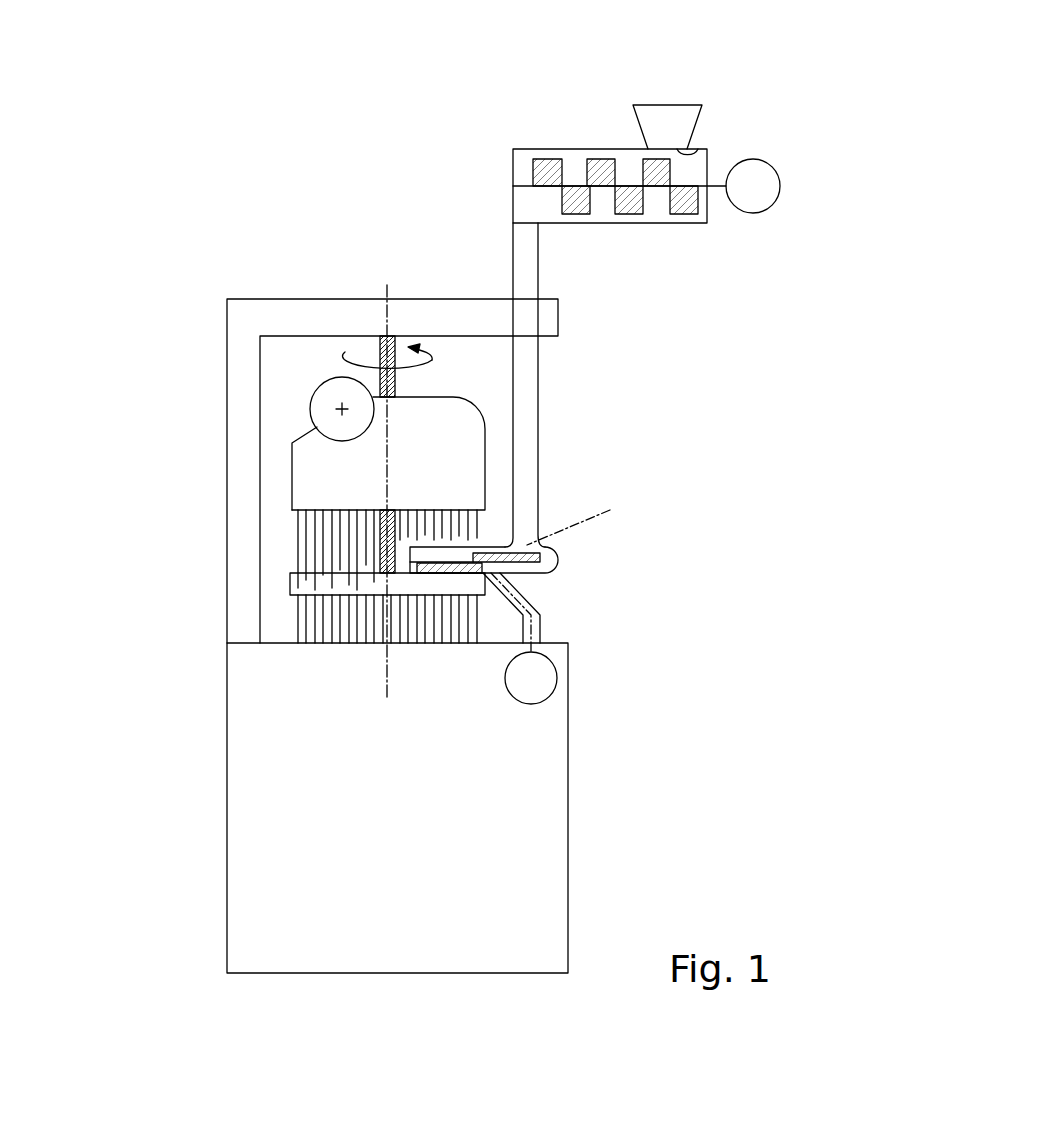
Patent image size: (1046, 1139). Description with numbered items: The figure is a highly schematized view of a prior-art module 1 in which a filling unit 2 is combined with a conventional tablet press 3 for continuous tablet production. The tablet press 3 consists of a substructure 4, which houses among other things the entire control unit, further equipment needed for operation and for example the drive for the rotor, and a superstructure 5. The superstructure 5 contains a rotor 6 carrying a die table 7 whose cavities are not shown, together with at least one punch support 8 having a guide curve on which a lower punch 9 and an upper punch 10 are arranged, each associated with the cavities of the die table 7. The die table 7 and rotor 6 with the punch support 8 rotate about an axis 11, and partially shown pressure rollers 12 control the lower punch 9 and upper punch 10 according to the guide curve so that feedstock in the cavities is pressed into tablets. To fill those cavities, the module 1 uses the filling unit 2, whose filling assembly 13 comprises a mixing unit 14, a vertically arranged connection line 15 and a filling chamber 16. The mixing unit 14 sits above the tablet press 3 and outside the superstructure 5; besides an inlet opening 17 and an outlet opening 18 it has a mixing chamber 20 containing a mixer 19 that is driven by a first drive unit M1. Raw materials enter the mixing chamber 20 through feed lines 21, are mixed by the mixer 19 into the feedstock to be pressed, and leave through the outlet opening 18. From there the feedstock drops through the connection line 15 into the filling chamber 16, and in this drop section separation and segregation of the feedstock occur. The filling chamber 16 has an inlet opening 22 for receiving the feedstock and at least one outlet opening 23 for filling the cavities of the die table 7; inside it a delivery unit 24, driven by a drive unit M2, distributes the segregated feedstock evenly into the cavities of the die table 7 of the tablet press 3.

The module 1 is at (200, 195).
The filling unit 2 is at (745, 422).
The tablet press 3 is at (150, 942).
The substructure 4 is at (200, 776).
The superstructure 5 is at (125, 531).
The rotor 6 is at (265, 548).
The die table 7 is at (280, 591).
The punch support 8 is at (305, 447).
The lower punch 9 is at (292, 622).
The upper punch 10 is at (295, 520).
The axis 11 is at (390, 288).
The pressure rollers 12 is at (327, 392).
The filling assembly 13 is at (605, 330).
The mixing unit 14 is at (590, 135).
The connection line 15 is at (540, 418).
The filling chamber 16 is at (578, 573).
The inlet opening 17 is at (700, 150).
The outlet opening 18 is at (520, 225).
The mixer 19 is at (683, 200).
The mixing chamber 20 is at (708, 215).
The feed lines 21 is at (672, 118).
The inlet opening 22 is at (565, 574).
The outlet opening 23 is at (438, 567).
The delivery unit 24 is at (548, 556).
The first drive unit M1 is at (780, 186).
The drive unit M2 is at (557, 678).